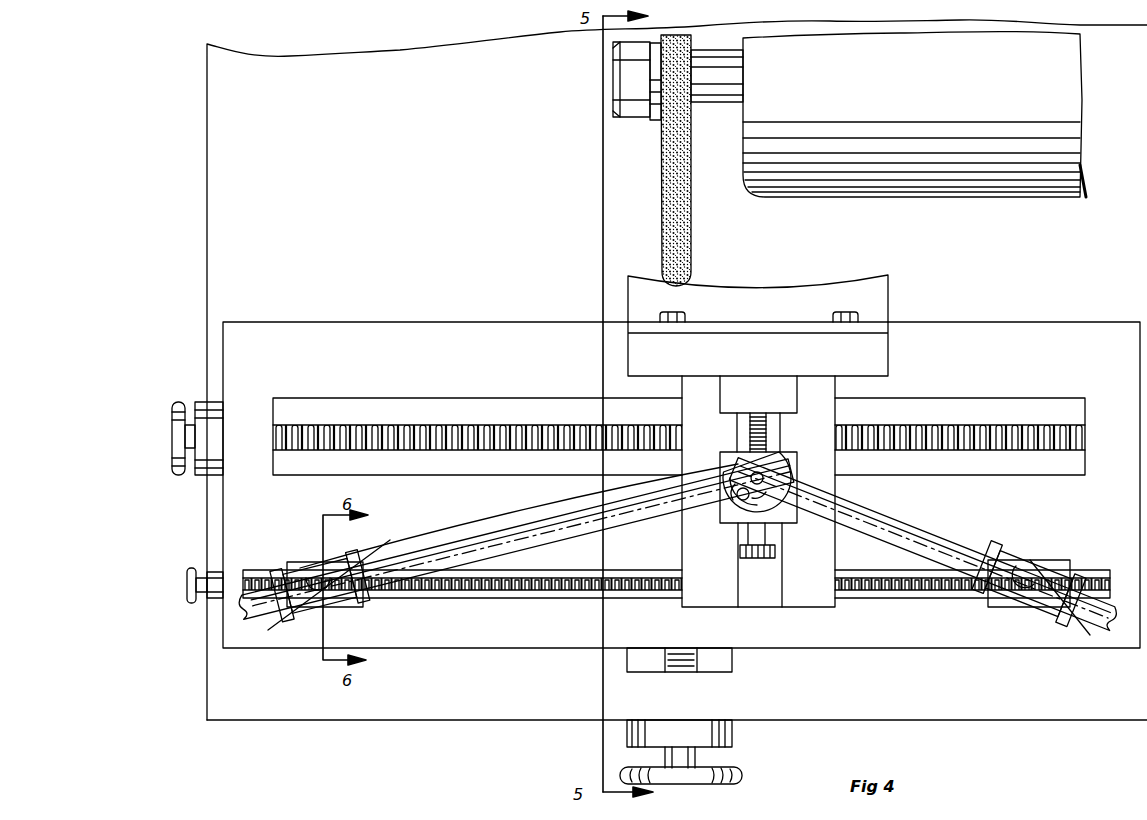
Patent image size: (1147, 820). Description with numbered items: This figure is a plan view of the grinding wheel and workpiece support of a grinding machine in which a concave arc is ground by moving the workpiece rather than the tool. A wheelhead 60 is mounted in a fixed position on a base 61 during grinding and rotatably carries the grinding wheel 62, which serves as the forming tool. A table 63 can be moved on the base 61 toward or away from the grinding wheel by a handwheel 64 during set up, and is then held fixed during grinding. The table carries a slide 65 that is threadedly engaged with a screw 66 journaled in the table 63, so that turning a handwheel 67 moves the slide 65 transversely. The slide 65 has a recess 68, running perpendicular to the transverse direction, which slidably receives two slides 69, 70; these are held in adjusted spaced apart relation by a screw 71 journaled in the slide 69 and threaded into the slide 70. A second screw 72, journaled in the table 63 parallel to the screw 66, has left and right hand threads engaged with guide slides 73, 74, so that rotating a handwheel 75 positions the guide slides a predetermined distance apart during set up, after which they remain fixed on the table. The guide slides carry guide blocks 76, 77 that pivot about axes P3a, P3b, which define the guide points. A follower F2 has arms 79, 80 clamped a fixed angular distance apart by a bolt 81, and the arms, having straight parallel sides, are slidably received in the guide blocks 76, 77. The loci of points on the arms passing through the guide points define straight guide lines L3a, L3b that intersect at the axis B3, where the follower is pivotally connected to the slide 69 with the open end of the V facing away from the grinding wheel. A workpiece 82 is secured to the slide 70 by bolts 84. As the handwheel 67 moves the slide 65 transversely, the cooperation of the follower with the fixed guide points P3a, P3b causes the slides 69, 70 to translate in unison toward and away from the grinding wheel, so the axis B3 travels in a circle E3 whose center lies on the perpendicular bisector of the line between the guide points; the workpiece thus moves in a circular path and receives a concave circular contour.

The wheelhead 60 is at (955, 200).
The base 61 is at (388, 203).
The grinding wheel 62 is at (693, 228).
The table 63 is at (303, 322).
The handwheel 64 is at (740, 770).
The slide 65 is at (714, 582).
The screw 66 is at (458, 420).
The handwheel 67 is at (190, 402).
The recess 68 is at (783, 578).
The slide 69 is at (797, 469).
The slide 70 is at (766, 398).
The screw 71 is at (748, 431).
The screw 72 is at (467, 598).
The guide slide 73 is at (365, 610).
The guide slide 74 is at (990, 606).
The handwheel 75 is at (192, 568).
The guide block 76 is at (357, 556).
The guide block 77 is at (1003, 552).
The arm 79 is at (446, 540).
The arm 80 is at (895, 545).
The bolt 81 is at (736, 492).
The workpiece 82 is at (762, 290).
The bolts 84 is at (862, 320).
The axis B3 is at (763, 472).
The circle E3 is at (424, 526).
The follower F2 is at (928, 528).
The guide line L3a is at (510, 540).
The guide line L3b is at (885, 520).
The pivot axis P3a is at (310, 570).
The pivot axis P3b is at (1033, 566).